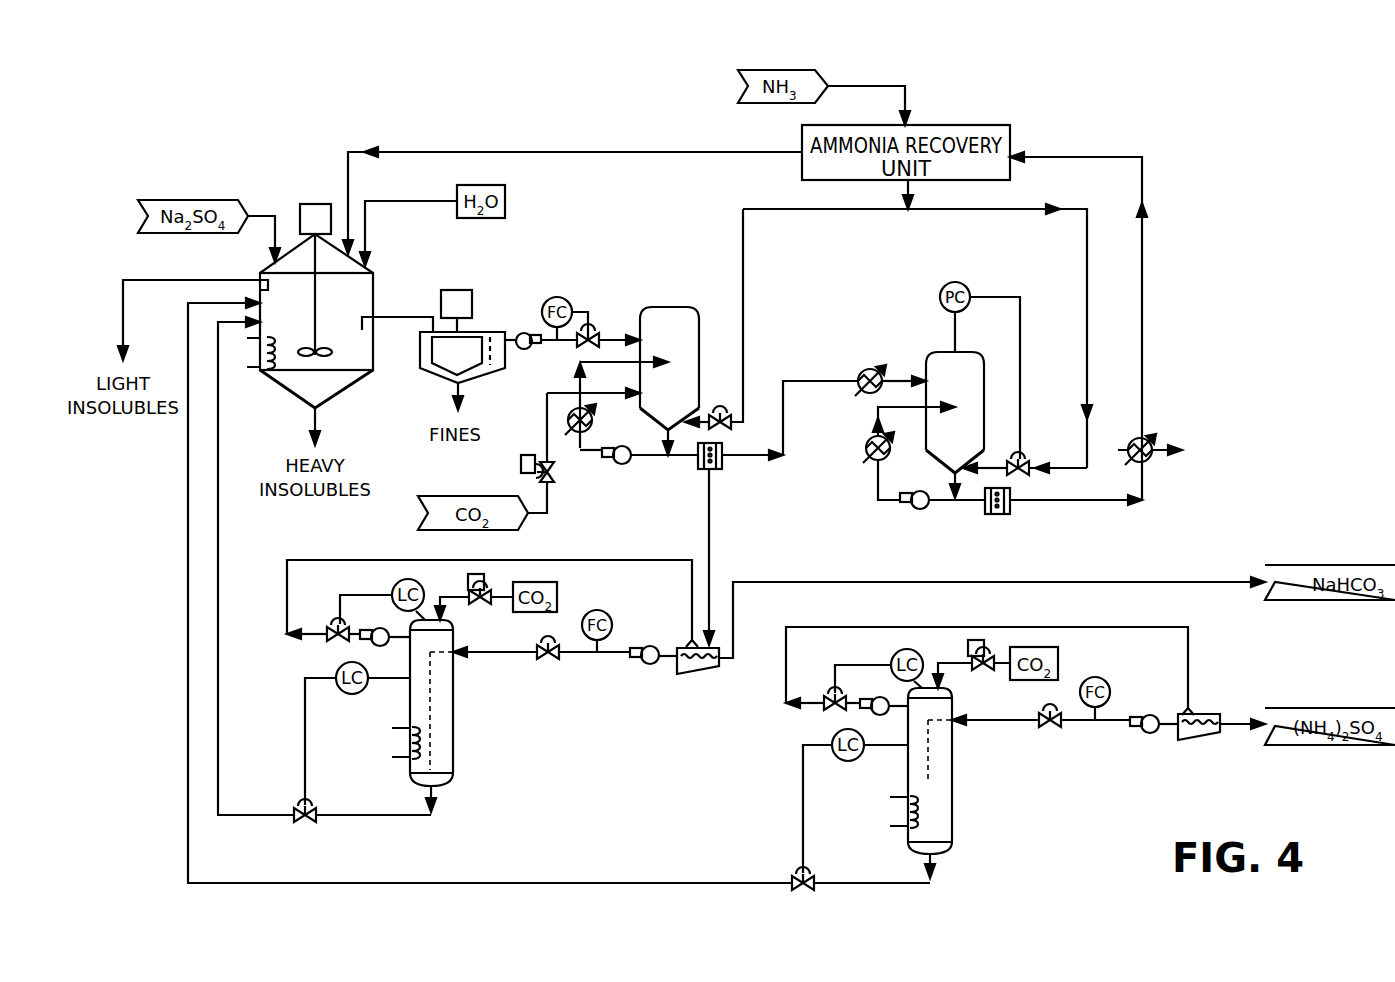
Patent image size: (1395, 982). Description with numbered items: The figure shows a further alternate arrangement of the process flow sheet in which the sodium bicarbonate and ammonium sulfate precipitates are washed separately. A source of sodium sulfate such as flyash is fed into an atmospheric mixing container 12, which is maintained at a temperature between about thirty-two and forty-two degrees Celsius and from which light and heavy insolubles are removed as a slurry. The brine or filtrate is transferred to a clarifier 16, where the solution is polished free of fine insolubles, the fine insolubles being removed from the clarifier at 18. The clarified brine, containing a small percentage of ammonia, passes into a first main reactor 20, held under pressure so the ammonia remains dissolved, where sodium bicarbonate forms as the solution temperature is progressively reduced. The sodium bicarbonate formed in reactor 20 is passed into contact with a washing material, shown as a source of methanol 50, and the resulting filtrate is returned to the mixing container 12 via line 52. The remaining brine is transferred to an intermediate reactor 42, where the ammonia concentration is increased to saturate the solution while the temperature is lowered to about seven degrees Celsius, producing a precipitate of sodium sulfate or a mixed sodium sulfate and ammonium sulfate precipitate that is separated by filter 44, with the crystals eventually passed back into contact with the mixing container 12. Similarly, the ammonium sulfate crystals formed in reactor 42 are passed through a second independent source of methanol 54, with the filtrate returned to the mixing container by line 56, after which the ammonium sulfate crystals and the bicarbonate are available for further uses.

The atmospheric mixing container 12 is at (292, 250).
The clarifier 16 is at (478, 332).
The fine insolubles outlet 18 is at (462, 389).
The first main reactor 20 is at (672, 307).
The intermediate reactor 42 is at (941, 351).
The filter 44 is at (1010, 514).
The source of methanol 50 is at (455, 711).
The line 52 is at (258, 822).
The second independent source of methanol 54 is at (955, 780).
The line 56 is at (700, 883).